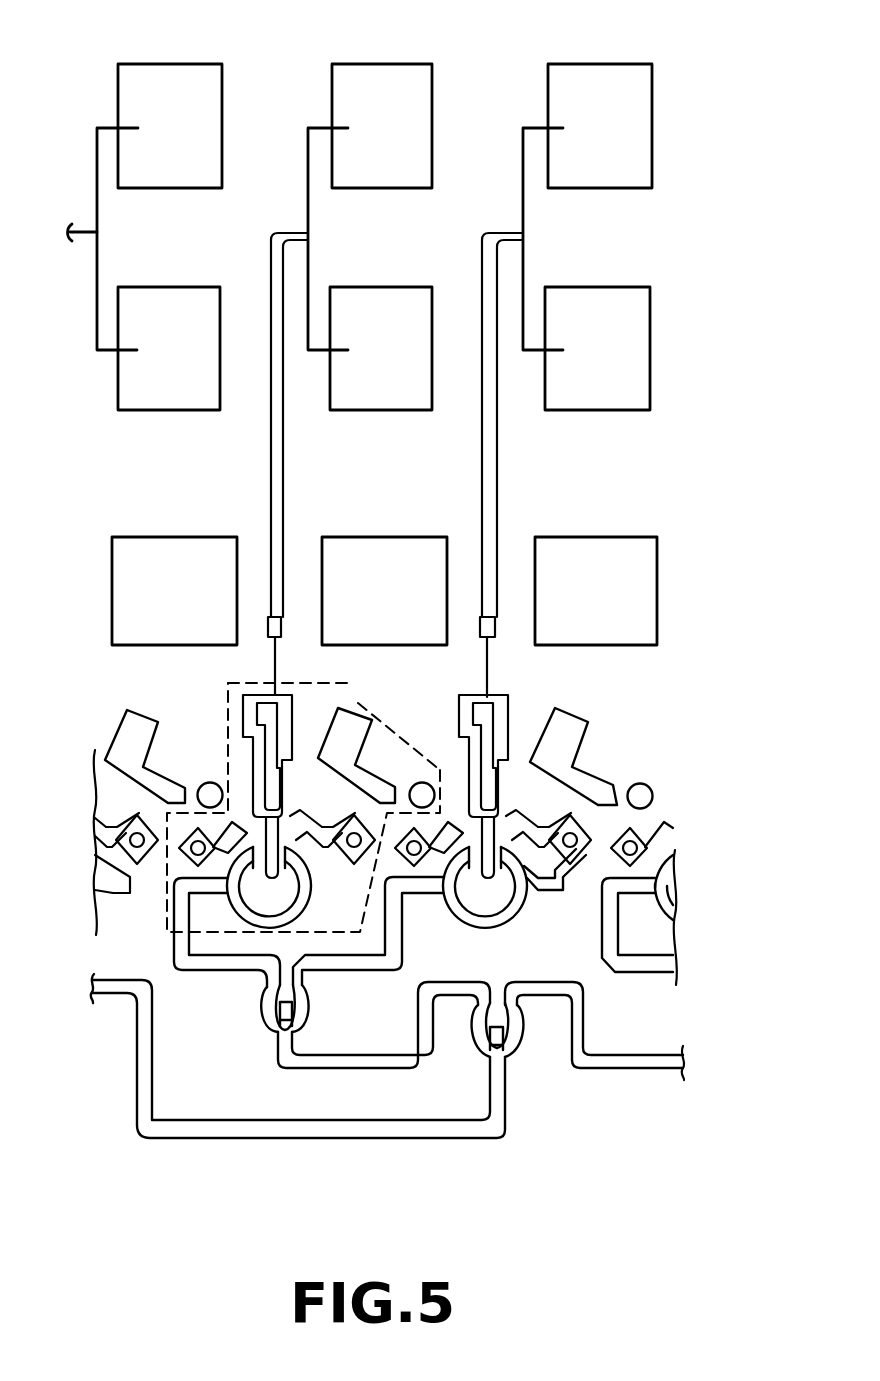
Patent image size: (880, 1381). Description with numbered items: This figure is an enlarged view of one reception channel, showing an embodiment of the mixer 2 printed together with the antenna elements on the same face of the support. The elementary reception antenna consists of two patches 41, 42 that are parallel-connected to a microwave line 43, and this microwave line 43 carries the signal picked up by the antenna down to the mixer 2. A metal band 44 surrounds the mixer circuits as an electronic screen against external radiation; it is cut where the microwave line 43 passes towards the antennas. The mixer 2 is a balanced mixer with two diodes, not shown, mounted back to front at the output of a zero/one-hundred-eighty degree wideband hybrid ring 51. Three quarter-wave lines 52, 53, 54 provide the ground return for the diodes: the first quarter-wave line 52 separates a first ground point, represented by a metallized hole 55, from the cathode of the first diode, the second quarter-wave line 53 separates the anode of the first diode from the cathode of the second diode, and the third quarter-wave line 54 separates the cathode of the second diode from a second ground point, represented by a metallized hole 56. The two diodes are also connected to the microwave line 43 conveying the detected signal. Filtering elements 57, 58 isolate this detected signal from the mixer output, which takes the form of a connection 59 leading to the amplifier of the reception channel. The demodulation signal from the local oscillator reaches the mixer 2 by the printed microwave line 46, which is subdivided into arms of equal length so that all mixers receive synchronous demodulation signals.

The mixer circuit 2 is at (402, 728).
The patch 41 is at (405, 90).
The patch 42 is at (403, 315).
The microwave line 43 is at (271, 447).
The metal band 44 is at (396, 567).
The printed microwave line 46 is at (434, 1130).
The hybrid ring 51 is at (238, 915).
The first quarter-wave line 52 is at (228, 755).
The second quarter-wave line 53 is at (272, 887).
The third quarter-wave line 54 is at (313, 812).
The metallized hole 55 is at (200, 783).
The metallized hole 56 is at (362, 843).
The filtering element 57 is at (278, 692).
The filtering element 58 is at (365, 705).
The connection 59 is at (424, 784).